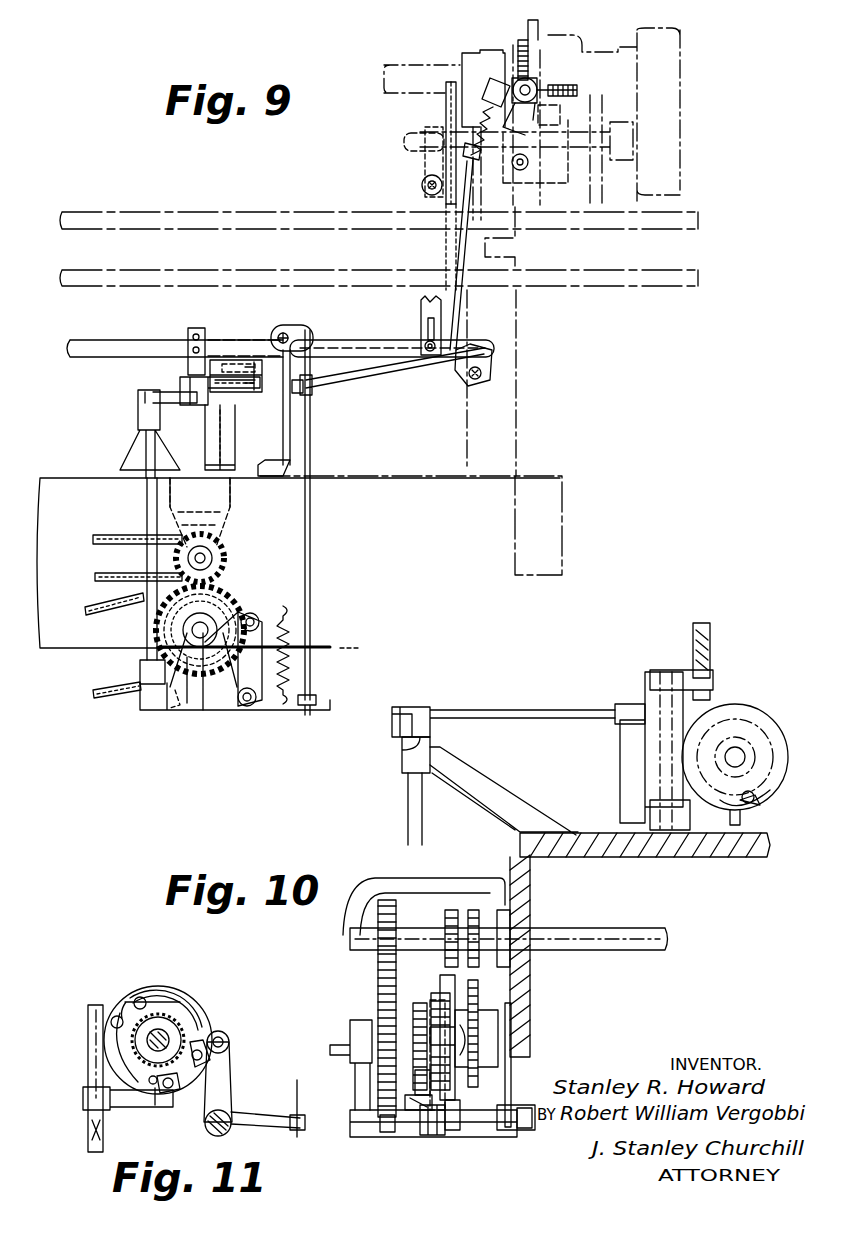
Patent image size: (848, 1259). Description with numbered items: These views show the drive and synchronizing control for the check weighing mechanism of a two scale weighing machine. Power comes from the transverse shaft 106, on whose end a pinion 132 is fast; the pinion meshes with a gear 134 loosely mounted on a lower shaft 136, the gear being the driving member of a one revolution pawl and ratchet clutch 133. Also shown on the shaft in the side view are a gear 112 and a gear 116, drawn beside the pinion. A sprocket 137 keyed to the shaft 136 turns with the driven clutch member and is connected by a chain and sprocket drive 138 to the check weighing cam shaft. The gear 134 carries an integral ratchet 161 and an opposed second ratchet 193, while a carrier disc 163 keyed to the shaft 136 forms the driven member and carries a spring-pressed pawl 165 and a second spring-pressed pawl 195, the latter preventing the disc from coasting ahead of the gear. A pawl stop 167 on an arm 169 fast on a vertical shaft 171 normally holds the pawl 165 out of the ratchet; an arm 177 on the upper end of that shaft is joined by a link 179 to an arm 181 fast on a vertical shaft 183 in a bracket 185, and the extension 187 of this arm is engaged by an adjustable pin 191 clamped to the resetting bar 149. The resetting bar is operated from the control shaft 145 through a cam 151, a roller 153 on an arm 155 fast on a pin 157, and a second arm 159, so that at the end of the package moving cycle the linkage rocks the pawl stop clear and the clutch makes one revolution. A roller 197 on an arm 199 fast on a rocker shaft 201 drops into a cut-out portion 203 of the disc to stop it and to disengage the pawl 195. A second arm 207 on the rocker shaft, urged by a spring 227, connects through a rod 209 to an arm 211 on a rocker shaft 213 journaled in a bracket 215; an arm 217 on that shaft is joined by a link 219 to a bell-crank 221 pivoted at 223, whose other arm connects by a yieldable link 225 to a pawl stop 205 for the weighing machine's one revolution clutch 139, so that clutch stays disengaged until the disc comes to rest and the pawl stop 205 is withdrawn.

In FIG. 9, the transverse shaft 106 is at (203, 556).
In FIG. 10, the transverse shaft 106 is at (622, 920).
In FIG. 10, the gear 112 is at (474, 910).
In FIG. 10, the gear 116 is at (450, 910).
In FIG. 9, the pinion 132 is at (224, 562).
In FIG. 10, the pinion 132 is at (380, 925).
In FIG. 11, the one revolution clutch 133 is at (98, 984).
In FIG. 9, the gear 134 is at (232, 592).
In FIG. 10, the gear 134 is at (384, 1010).
In FIG. 9, the lower shaft 136 is at (186, 633).
In FIG. 10, the lower shaft 136 is at (350, 1037).
In FIG. 11, the lower shaft 136 is at (143, 1020).
In FIG. 10, the sprocket 137 is at (482, 1000).
In FIG. 9, the chain and sprocket drive 138 is at (108, 697).
In FIG. 9, the one revolution clutch 139 is at (509, 42).
In FIG. 9, the control shaft 145 is at (410, 143).
In FIG. 9, the resetting bar 149 is at (138, 342).
In FIG. 10, the resetting bar 149 is at (712, 642).
In FIG. 9, the cam 151 is at (445, 112).
In FIG. 9, the roller 153 is at (442, 130).
In FIG. 9, the arm 155 is at (422, 164).
In FIG. 9, the pin 157 is at (424, 186).
In FIG. 9, the second arm 159 is at (420, 312).
In FIG. 10, the ratchet 161 is at (425, 1010).
In FIG. 11, the ratchet 161 is at (125, 1055).
In FIG. 10, the carrier disc 163 is at (450, 1108).
In FIG. 11, the carrier disc 163 is at (143, 985).
In FIG. 10, the spring-pressed pawl 165 is at (388, 1085).
In FIG. 11, the spring-pressed pawl 165 is at (182, 1100).
In FIG. 9, the pawl stop 167 is at (176, 705).
In FIG. 10, the pawl stop 167 is at (380, 1108).
In FIG. 11, the pawl stop 167 is at (155, 1106).
In FIG. 9, the arm 169 is at (140, 671).
In FIG. 10, the arm 169 is at (418, 1112).
In FIG. 11, the arm 169 is at (96, 1100).
In FIG. 9, the vertical shaft 171 is at (147, 503).
In FIG. 10, the vertical shaft 171 is at (408, 786).
In FIG. 11, the vertical shaft 171 is at (90, 1028).
In FIG. 9, the arm 177 is at (172, 395).
In FIG. 10, the arm 177 is at (400, 746).
In FIG. 9, the link 179 is at (207, 390).
In FIG. 10, the link 179 is at (524, 706).
In FIG. 9, the arm 181 is at (245, 368).
In FIG. 10, the arm 181 is at (636, 712).
In FIG. 10, the vertical shaft 183 is at (640, 745).
In FIG. 9, the bracket 185 is at (292, 460).
In FIG. 10, the bracket 185 is at (625, 780).
In FIG. 9, the extension 187 is at (210, 360).
In FIG. 10, the extension 187 is at (682, 672).
In FIG. 9, the adjustable pin 191 is at (193, 330).
In FIG. 10, the adjustable pin 191 is at (716, 672).
In FIG. 11, the second ratchet 193 is at (176, 1020).
In FIG. 11, the second spring-pressed pawl 195 is at (200, 1035).
In FIG. 9, the roller 197 is at (257, 618).
In FIG. 10, the roller 197 is at (445, 1035).
In FIG. 11, the roller 197 is at (230, 1038).
In FIG. 9, the arm 199 is at (263, 683).
In FIG. 10, the arm 199 is at (425, 1133).
In FIG. 11, the arm 199 is at (226, 1078).
In FIG. 9, the rocker shaft 201 is at (245, 704).
In FIG. 10, the rocker shaft 201 is at (452, 1122).
In FIG. 11, the rocker shaft 201 is at (212, 1130).
In FIG. 11, the cut-out portion 203 is at (230, 1047).
In FIG. 9, the pawl stop 205 is at (518, 172).
In FIG. 9, the second arm 207 is at (293, 706).
In FIG. 10, the second arm 207 is at (522, 1135).
In FIG. 11, the second arm 207 is at (278, 1130).
In FIG. 9, the rod 209 is at (318, 620).
In FIG. 10, the rod 209 is at (512, 1067).
In FIG. 11, the rod 209 is at (290, 1098).
In FIG. 9, the arm 211 is at (314, 324).
In FIG. 9, the rocker shaft 213 is at (285, 330).
In FIG. 9, the bracket 215 is at (300, 440).
In FIG. 9, the arm 217 is at (318, 357).
In FIG. 9, the link 219 is at (367, 376).
In FIG. 9, the bell-crank 221 is at (492, 363).
In FIG. 9, the pivot 223 is at (482, 385).
In FIG. 9, the yieldable link 225 is at (463, 243).
In FIG. 9, the spring 227 is at (291, 660).